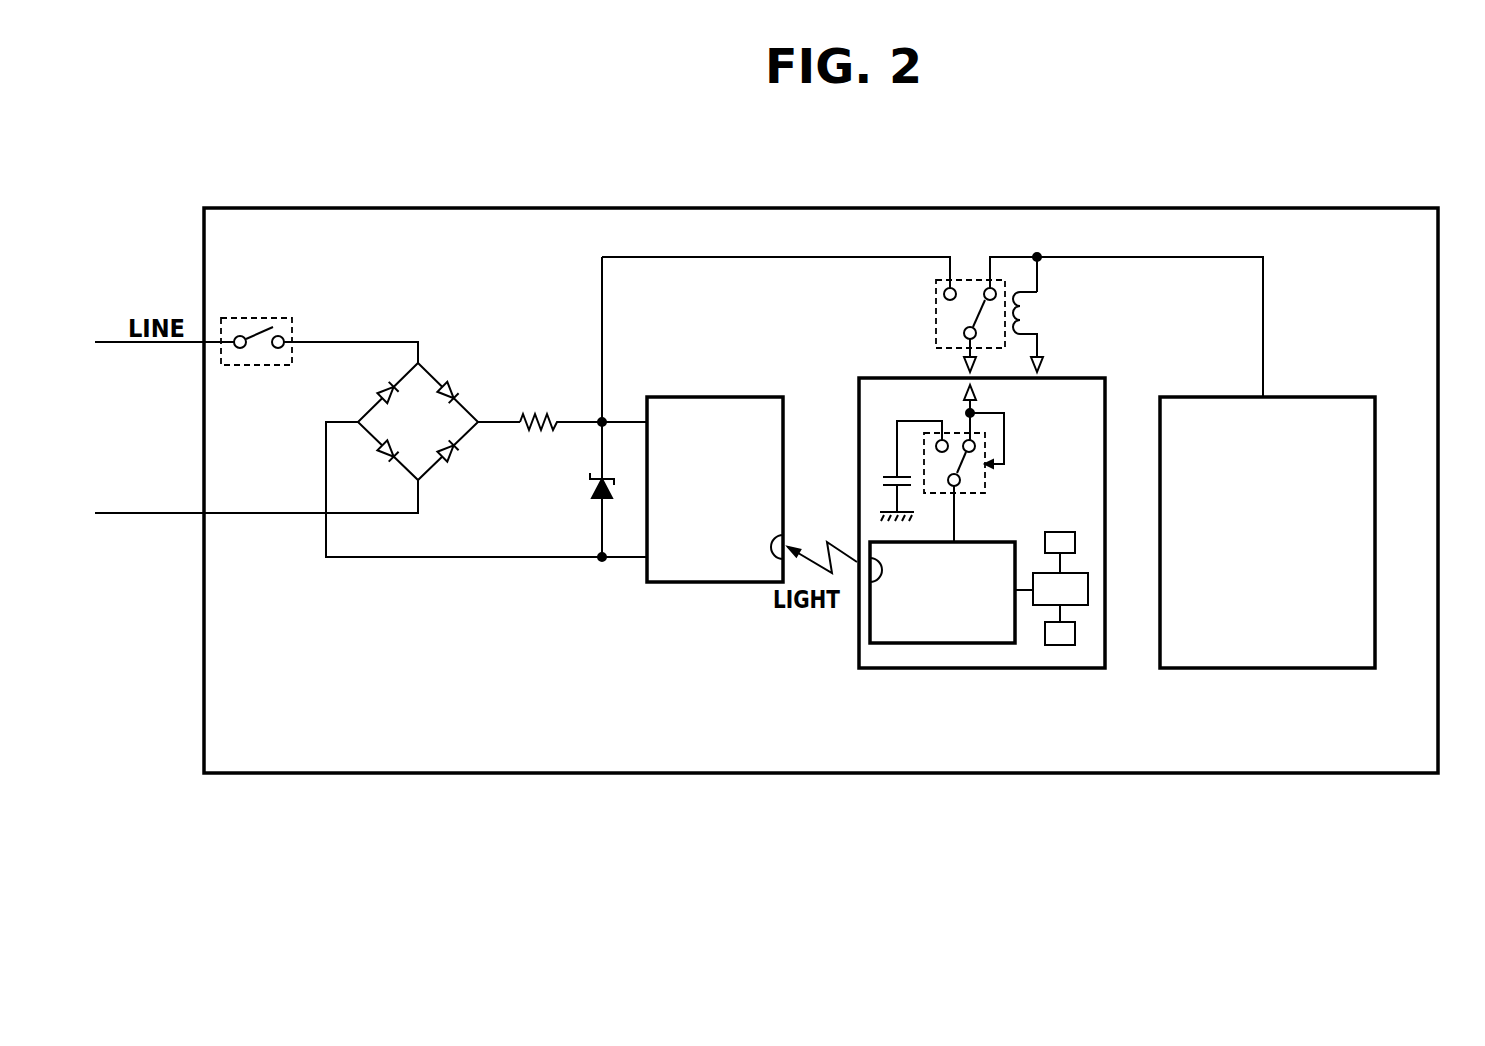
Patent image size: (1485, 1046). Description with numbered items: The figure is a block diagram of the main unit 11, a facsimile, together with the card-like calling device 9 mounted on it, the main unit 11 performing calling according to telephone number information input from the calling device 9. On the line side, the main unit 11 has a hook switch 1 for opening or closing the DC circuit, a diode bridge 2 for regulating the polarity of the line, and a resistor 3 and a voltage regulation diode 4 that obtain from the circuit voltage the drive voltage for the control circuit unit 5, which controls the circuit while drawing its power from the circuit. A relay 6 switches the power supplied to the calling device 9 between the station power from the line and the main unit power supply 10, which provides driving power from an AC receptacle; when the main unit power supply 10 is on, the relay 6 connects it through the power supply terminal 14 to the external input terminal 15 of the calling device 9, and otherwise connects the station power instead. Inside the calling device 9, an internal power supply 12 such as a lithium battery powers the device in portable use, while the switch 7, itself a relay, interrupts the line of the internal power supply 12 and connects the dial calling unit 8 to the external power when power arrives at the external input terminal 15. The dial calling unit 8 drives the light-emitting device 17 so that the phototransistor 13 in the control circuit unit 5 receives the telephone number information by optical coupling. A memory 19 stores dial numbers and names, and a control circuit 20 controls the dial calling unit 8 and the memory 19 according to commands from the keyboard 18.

The hook switch 1 is at (272, 316).
The diode bridge 2 is at (434, 375).
The resistor 3 is at (536, 428).
The voltage regulation diode 4 is at (592, 489).
The control circuit unit 5 is at (699, 396).
The relay 6 is at (935, 312).
The switch 7 is at (988, 488).
The dial calling unit 8 is at (989, 544).
The calling device 9 is at (858, 660).
The main unit power supply 10 is at (1318, 396).
The main unit 11 is at (897, 206).
The internal power supply 12 is at (887, 473).
The phototransistor 13 is at (788, 540).
The power supply terminal 14 is at (960, 365).
The external input terminal 15 is at (962, 392).
The light-emitting device 17 is at (866, 585).
The keyboard 18 is at (1060, 531).
The memory 19 is at (1075, 635).
The control circuit 20 is at (1088, 587).